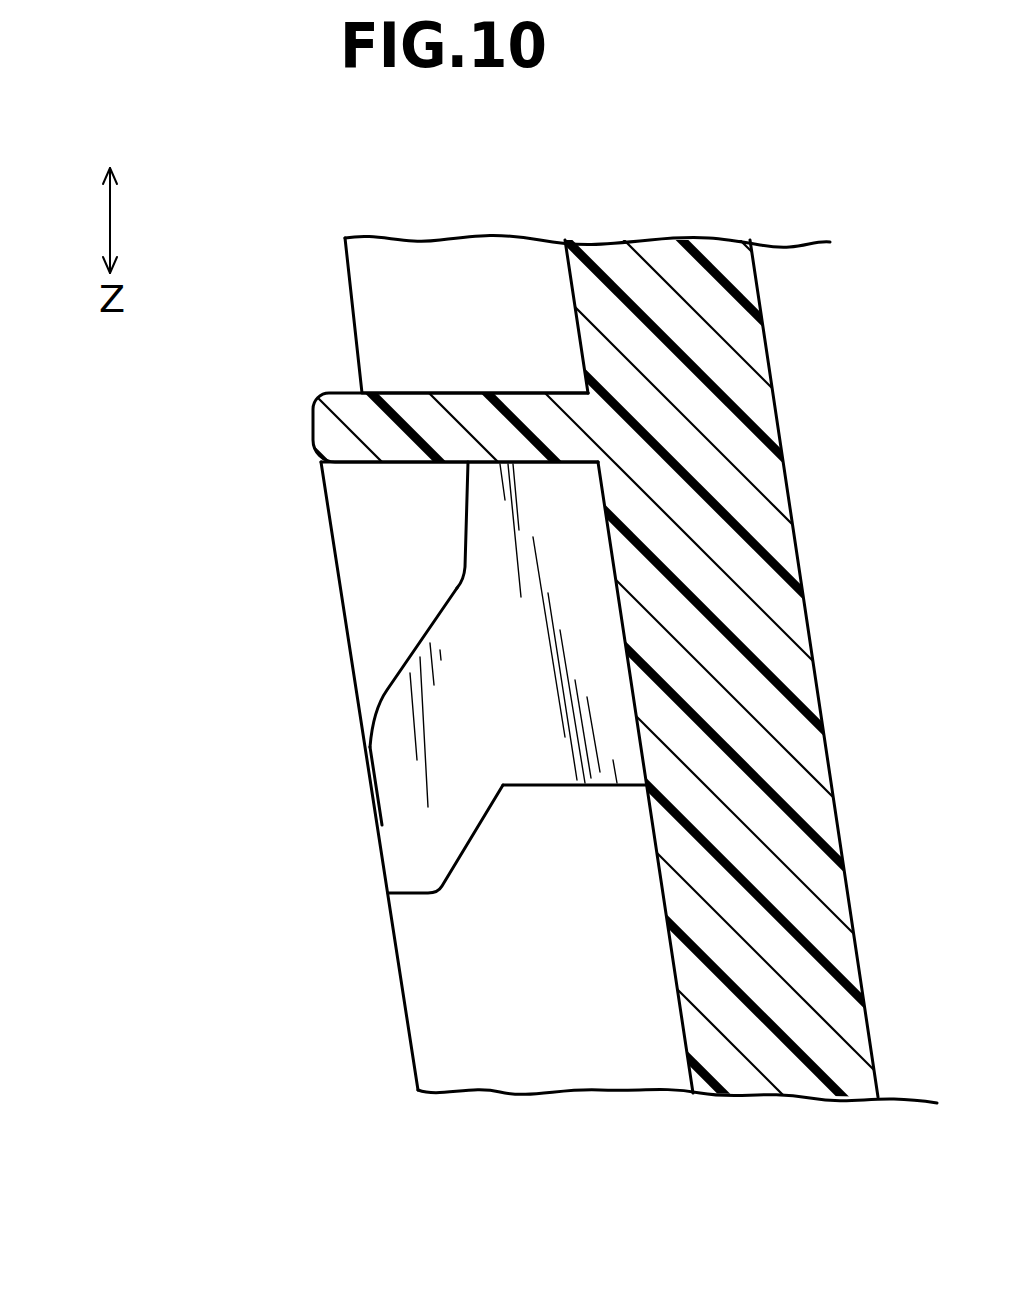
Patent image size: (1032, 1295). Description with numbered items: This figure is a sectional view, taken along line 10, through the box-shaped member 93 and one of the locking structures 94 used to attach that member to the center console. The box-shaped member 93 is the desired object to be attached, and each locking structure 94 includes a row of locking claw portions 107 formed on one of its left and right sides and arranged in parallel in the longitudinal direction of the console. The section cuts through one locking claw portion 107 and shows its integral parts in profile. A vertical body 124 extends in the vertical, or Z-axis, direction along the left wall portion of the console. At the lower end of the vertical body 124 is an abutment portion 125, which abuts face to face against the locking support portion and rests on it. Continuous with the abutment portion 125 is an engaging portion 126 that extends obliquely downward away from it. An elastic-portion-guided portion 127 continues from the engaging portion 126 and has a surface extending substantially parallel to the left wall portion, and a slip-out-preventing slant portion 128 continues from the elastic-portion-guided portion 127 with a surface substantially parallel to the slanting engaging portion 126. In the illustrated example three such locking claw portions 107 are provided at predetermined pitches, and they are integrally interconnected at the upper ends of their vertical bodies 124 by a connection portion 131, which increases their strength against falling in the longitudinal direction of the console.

The housing wall 10 is at (573, 337).
The box-shaped member 93 is at (790, 197).
The locking structure 94 is at (210, 490).
The locking claw portion 107 is at (465, 520).
The vertical body 124 is at (480, 568).
The abutment portion 125 is at (548, 787).
The engaging portion 126 is at (462, 856).
The elastic-portion-guided portion 127 is at (372, 798).
The slip-out-preventing slant portion 128 is at (440, 617).
The connection portion 131 is at (452, 393).